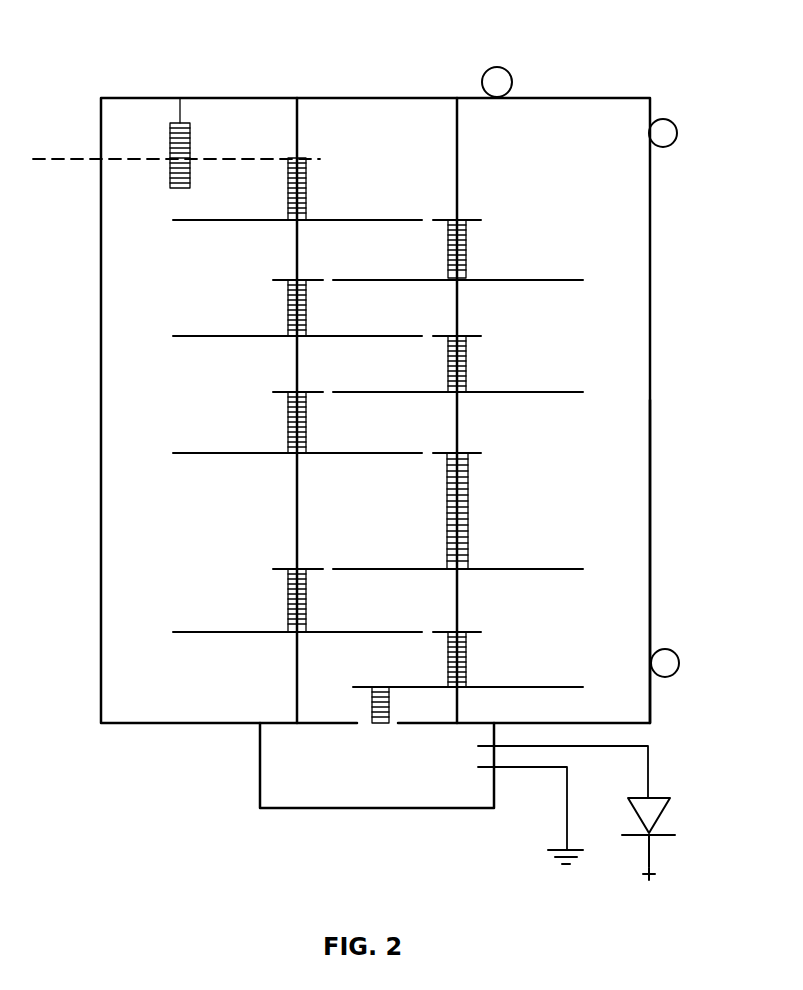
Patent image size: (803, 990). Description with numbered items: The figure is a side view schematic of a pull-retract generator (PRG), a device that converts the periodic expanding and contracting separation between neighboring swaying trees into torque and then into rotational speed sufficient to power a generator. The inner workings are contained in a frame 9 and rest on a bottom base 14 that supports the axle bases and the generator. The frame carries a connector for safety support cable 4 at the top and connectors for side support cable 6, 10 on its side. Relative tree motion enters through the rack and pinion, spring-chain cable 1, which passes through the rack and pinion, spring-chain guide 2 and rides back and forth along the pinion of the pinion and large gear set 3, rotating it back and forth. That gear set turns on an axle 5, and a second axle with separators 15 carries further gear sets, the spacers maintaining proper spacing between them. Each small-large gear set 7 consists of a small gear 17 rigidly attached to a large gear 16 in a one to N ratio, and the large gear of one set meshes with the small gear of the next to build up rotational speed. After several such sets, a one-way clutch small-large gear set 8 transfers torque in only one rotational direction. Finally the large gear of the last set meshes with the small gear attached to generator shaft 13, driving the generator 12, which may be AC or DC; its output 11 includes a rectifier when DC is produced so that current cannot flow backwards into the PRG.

The rack and pinion, spring-chain cable 1 is at (53, 159).
The rack and pinion, spring-chain guide 2 is at (190, 143).
The pinion and large gear set 3 is at (307, 178).
The connector for safety support cable 4 is at (499, 67).
The axle 5 is at (459, 152).
The connector for side support cable 6 is at (677, 133).
The small-large gear set 7 is at (467, 247).
The one-way clutch small-large gear set 8 is at (469, 505).
The frame 9 is at (651, 573).
The connector for side support cable 10 is at (679, 661).
The generator output 11 is at (671, 824).
The generator 12 is at (340, 776).
The small gear attached to generator shaft 13 is at (348, 687).
The bottom base 14 is at (137, 726).
The axle with separators 15 is at (297, 507).
The large gear 16 is at (178, 335).
The small gear 17 is at (283, 281).